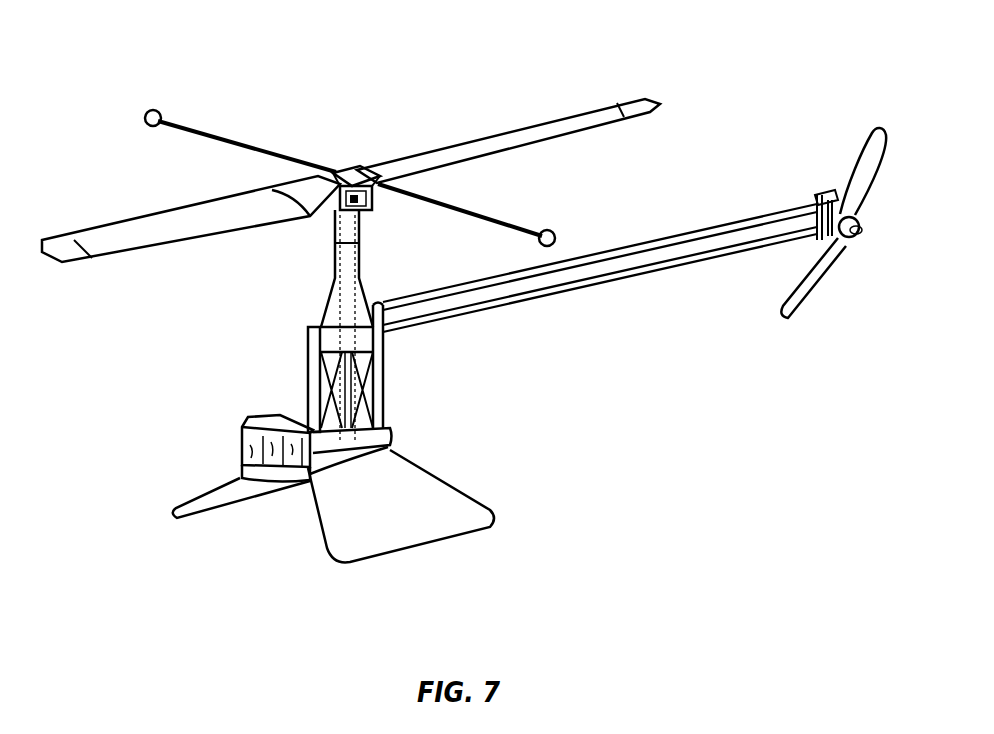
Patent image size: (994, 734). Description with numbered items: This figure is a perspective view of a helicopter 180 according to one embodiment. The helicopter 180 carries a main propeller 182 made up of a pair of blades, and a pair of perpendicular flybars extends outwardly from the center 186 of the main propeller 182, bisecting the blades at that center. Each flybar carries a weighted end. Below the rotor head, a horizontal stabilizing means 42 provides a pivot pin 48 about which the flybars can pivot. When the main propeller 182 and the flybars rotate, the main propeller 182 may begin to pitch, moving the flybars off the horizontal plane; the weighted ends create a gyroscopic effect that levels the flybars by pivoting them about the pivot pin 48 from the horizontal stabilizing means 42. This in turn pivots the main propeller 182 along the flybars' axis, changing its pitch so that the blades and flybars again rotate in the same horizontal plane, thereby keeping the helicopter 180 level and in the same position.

The horizontal stabilizing means 42 is at (374, 210).
The pivot pin 48 is at (333, 203).
The helicopter 180 is at (298, 343).
The main propeller 182 is at (447, 135).
The center of the main propeller 186 is at (342, 150).